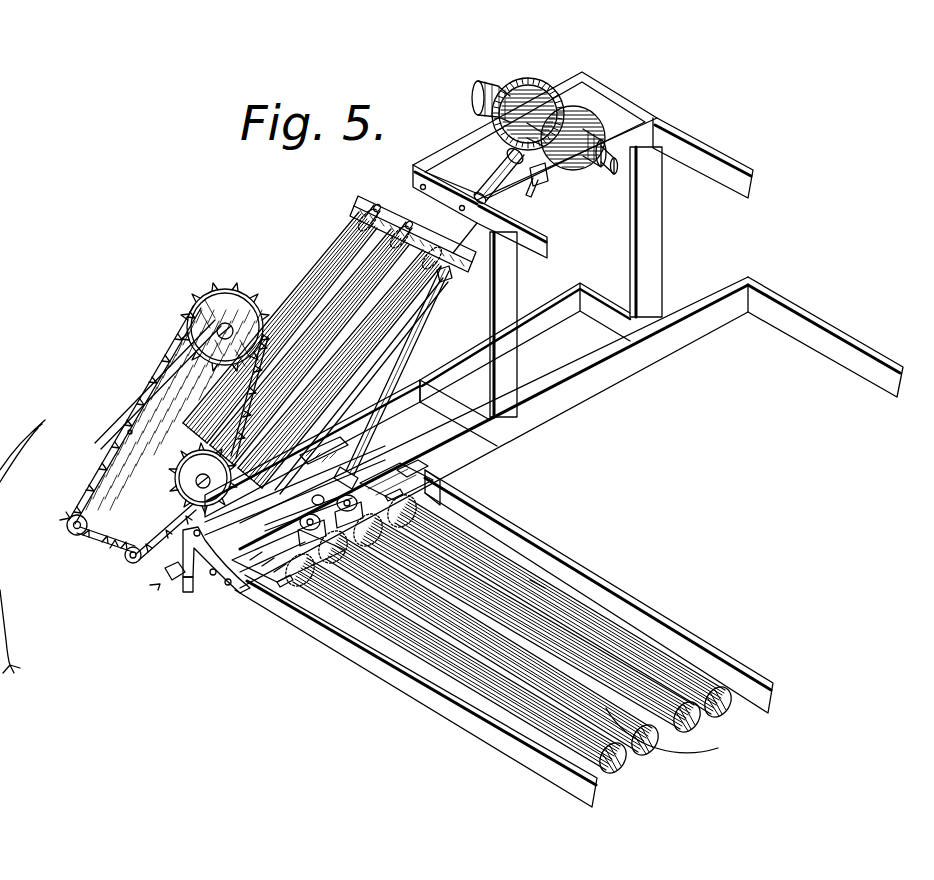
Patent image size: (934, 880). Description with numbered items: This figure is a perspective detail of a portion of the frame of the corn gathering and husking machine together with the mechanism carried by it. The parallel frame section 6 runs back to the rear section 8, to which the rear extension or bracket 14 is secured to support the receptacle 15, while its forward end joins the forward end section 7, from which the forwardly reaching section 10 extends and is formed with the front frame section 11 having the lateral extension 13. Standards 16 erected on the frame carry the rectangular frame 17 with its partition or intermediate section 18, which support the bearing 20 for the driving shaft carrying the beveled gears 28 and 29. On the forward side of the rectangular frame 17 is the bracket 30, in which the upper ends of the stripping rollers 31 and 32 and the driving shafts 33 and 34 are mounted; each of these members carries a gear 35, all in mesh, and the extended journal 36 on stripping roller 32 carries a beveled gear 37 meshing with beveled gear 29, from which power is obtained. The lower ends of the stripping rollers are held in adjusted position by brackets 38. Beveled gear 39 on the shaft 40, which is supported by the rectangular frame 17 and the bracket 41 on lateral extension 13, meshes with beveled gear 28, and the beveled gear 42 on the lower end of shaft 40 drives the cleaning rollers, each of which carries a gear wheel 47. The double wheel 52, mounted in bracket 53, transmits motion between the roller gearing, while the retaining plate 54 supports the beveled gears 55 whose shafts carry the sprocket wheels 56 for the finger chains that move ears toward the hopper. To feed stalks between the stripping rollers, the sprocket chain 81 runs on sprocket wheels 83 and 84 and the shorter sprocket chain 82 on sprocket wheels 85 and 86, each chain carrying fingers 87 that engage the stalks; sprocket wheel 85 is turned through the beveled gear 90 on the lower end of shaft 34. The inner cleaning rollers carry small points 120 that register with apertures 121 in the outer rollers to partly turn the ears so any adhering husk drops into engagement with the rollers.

The parallel frame section 6 is at (668, 352).
The forward end section 7 is at (745, 660).
The rear section 8 is at (875, 358).
The forwardly reaching section 10 is at (440, 507).
The front frame section 11 is at (520, 760).
The lateral extension 13 is at (318, 496).
The rear extension or bracket 14 is at (488, 643).
The receptacle 15 is at (526, 623).
The standards 16 is at (505, 302).
The rectangular frame 17 is at (730, 168).
The partition or intermediate section 18 is at (616, 158).
The bearing 20 is at (473, 88).
The beveled gear 28 is at (600, 114).
The beveled gear 29 is at (526, 80).
The bracket 30 is at (413, 234).
The stripping roller 31 is at (330, 300).
The stripping roller 32 is at (348, 288).
The driving shaft 33 is at (305, 305).
The driving shaft 34 is at (383, 336).
The gear 35 is at (358, 216).
The extended journal 36 is at (478, 170).
The beveled gear 37 is at (507, 149).
The bracket 38 is at (186, 580).
The beveled gear 39 is at (545, 169).
The shaft 40 is at (534, 186).
The bracket 41 is at (410, 467).
The beveled gear 42 is at (330, 455).
The gear wheel 47 is at (403, 493).
The double wheel 52 is at (290, 516).
The bracket 53 is at (342, 466).
The retaining plate 54 is at (250, 587).
The beveled gear 55 is at (288, 556).
The sprocket wheel 56 is at (396, 481).
The sprocket chain 81 is at (140, 383).
The sprocket chain 82 is at (150, 520).
The sprocket wheel 83 is at (225, 327).
The sprocket wheel 84 is at (67, 521).
The sprocket wheel 85 is at (203, 478).
The sprocket wheel 86 is at (168, 573).
The fingers 87 is at (178, 318).
The beveled gear 90 is at (295, 478).
The points 120 is at (718, 748).
The apertures 121 is at (535, 583).